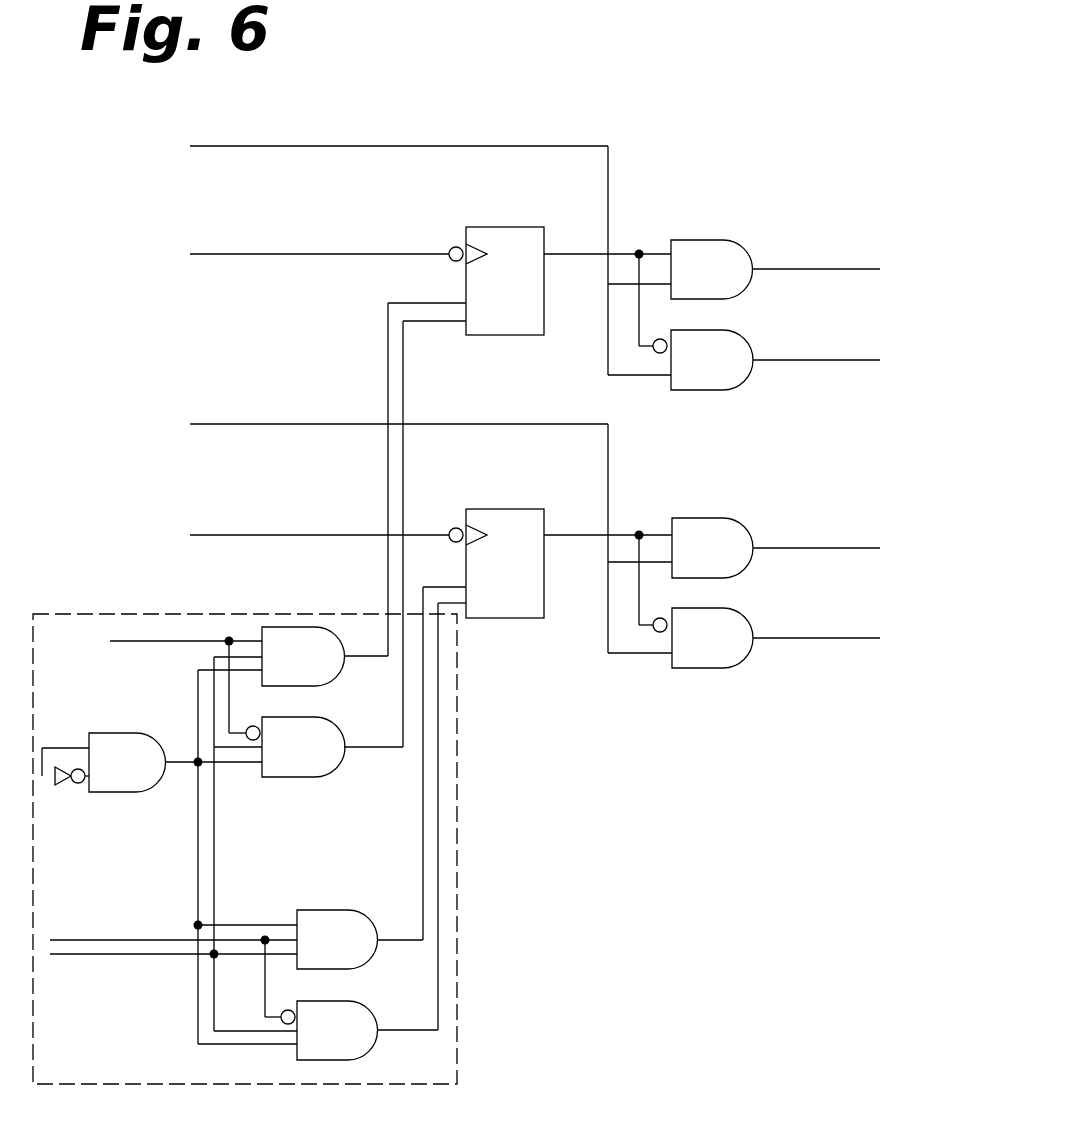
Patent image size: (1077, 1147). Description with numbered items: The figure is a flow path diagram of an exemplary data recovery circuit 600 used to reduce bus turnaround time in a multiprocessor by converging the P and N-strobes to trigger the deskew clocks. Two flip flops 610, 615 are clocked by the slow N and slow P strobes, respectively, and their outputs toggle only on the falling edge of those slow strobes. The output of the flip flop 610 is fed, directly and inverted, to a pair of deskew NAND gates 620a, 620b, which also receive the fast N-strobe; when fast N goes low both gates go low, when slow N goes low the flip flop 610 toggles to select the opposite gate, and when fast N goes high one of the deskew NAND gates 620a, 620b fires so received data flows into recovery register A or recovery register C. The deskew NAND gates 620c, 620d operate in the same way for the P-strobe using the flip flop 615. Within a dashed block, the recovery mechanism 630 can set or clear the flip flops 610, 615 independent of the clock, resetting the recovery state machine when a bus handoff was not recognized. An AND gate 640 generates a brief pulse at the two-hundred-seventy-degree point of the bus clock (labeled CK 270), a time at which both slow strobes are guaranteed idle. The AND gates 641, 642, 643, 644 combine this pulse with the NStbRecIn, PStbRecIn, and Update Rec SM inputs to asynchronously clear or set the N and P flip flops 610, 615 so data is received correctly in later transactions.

The data recovery circuit 600 is at (718, 86).
The flip flop 610 is at (502, 227).
The flip flop 615 is at (497, 509).
The deskew NAND gate 620a is at (710, 240).
The deskew NAND gate 620b is at (710, 390).
The deskew NAND gate 620c is at (710, 518).
The deskew NAND gate 620d is at (710, 668).
The recovery mechanism 630 is at (457, 965).
The AND gate 640 is at (140, 774).
The AND gate 641 is at (318, 677).
The AND gate 642 is at (318, 767).
The AND gate 643 is at (351, 954).
The AND gate 644 is at (353, 1044).
The clock signal CK 270 is at (67, 746).